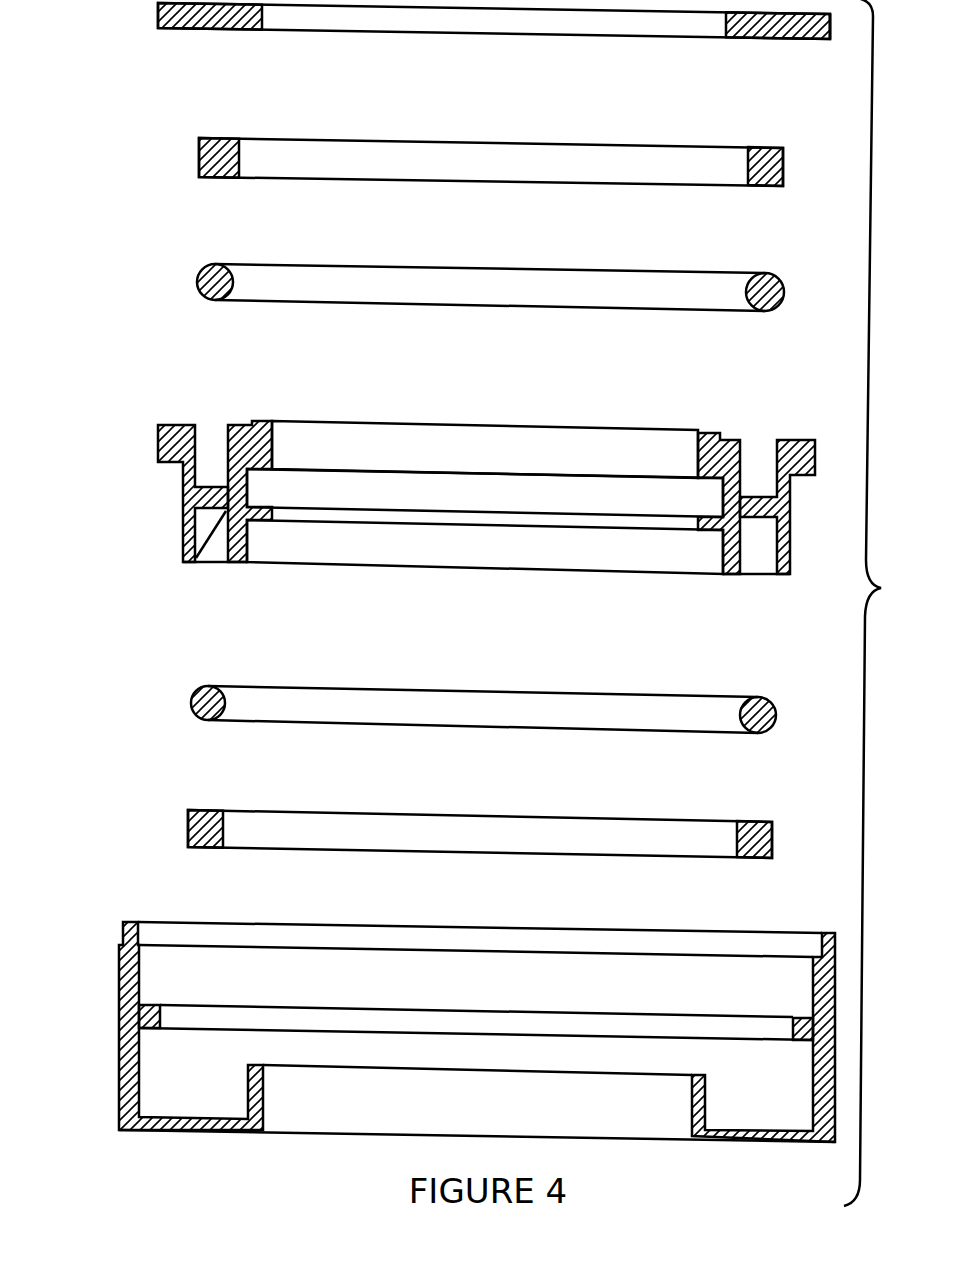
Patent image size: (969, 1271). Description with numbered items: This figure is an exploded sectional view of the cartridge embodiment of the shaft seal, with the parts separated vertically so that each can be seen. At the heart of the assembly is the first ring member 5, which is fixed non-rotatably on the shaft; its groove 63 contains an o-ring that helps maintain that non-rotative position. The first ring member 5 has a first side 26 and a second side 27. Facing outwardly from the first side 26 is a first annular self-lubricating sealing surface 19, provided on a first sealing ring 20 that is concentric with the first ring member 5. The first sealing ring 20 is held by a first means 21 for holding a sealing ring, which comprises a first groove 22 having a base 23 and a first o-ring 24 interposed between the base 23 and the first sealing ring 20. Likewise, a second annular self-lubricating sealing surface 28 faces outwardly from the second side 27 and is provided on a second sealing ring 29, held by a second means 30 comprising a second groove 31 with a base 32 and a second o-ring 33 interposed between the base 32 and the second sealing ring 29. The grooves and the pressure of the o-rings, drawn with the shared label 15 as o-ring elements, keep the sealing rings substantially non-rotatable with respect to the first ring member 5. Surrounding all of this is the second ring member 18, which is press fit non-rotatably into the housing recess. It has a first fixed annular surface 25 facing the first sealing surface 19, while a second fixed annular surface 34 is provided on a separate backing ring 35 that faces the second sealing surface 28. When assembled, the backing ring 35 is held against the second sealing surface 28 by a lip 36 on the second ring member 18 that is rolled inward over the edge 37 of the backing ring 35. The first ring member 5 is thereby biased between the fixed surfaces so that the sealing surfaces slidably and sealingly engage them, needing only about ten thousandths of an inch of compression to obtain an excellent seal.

The first ring member 5 is at (148, 434).
The O-ring 15 is at (433, 462).
The second ring member 18 is at (153, 40).
The first annular self-lubricating sealing surface 19 is at (210, 852).
The first sealing ring 20 is at (308, 825).
The first means for holding a sealing ring 21 is at (326, 674).
The first groove 22 is at (743, 547).
The base 23 is at (184, 566).
The first o-ring 24 is at (204, 704).
The first fixed annular surface 25 is at (755, 1128).
The first side 26 is at (621, 580).
The second side 27 is at (623, 410).
The second annular self-lubricating sealing surface 28 is at (224, 137).
The second sealing ring 29 is at (425, 160).
The second means for holding a sealing ring 30 is at (331, 320).
The second groove 31 is at (213, 427).
The base 32 is at (765, 428).
The second o-ring 33 is at (200, 270).
The second fixed annular surface 34 is at (768, 42).
The backing ring 35 is at (548, 38).
The lip 36 is at (119, 922).
The edge 37 is at (831, 27).
The groove 63 is at (467, 500).